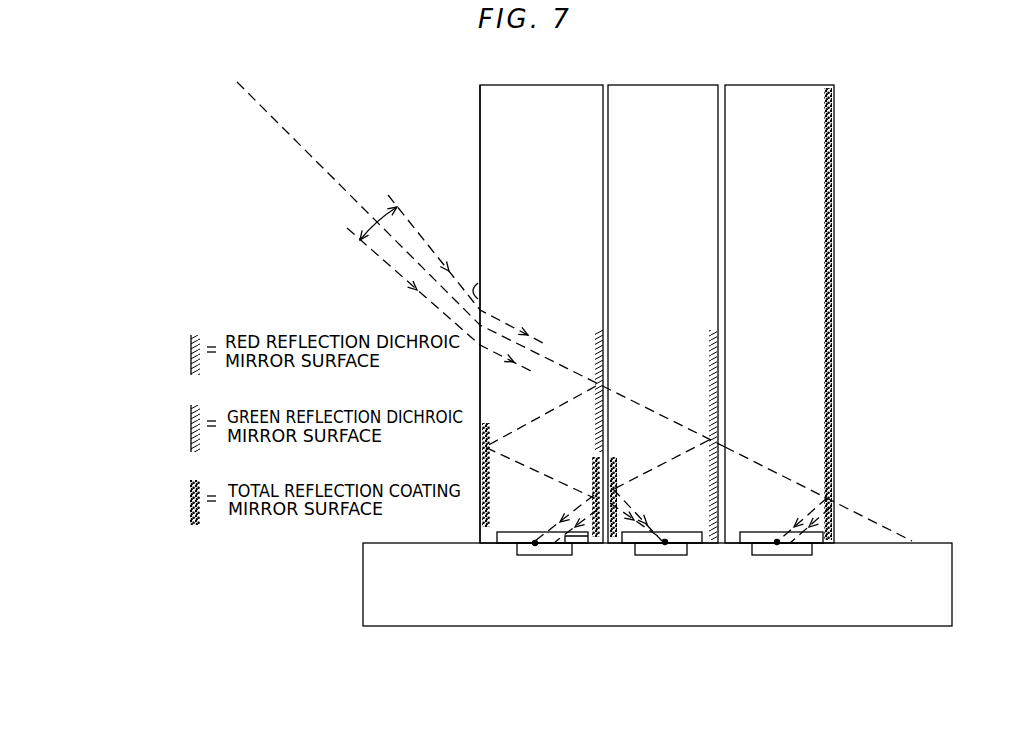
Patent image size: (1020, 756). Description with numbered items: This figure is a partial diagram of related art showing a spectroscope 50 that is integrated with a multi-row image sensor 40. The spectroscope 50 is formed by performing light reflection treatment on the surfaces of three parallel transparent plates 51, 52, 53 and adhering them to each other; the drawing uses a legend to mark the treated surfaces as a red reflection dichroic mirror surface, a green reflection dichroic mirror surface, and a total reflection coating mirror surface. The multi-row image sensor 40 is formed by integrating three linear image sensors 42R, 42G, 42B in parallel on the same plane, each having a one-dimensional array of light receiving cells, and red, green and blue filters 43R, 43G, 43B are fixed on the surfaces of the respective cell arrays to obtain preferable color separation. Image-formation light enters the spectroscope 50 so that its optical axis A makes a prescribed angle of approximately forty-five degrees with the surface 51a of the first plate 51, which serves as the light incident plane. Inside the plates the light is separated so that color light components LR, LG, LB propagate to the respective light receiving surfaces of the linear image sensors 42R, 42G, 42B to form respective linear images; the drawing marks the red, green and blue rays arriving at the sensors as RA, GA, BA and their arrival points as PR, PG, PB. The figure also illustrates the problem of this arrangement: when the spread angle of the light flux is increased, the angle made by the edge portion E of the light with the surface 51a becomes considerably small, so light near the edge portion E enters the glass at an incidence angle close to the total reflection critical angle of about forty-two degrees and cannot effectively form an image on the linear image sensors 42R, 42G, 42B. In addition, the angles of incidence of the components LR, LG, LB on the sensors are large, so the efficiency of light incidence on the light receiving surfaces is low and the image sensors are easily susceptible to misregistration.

The spectroscope 50 is at (819, 83).
The transparent plate 51 is at (544, 122).
The surface 51a is at (479, 387).
The transparent plate 52 is at (663, 122).
The transparent plate 53 is at (777, 122).
The multi-row image sensor 40 is at (361, 590).
The red filter 43R is at (513, 534).
The red light receiving point PR is at (535, 544).
The linear image sensor 42R is at (563, 551).
The green filter 43G is at (687, 532).
The green light receiving point PG is at (665, 544).
The linear image sensor 42G is at (687, 549).
The blue filter 43B is at (757, 532).
The blue light receiving point PB is at (777, 544).
The linear image sensor 42B is at (810, 549).
The optical axis A is at (316, 162).
The edge portion E is at (416, 228).
The red color light component LR is at (560, 411).
The red light rays reaching detector RA is at (591, 512).
The green color light component LG is at (664, 472).
The green light rays reaching detector GA is at (629, 517).
The blue color light component LB is at (760, 463).
The blue light rays reaching detector BA is at (821, 512).